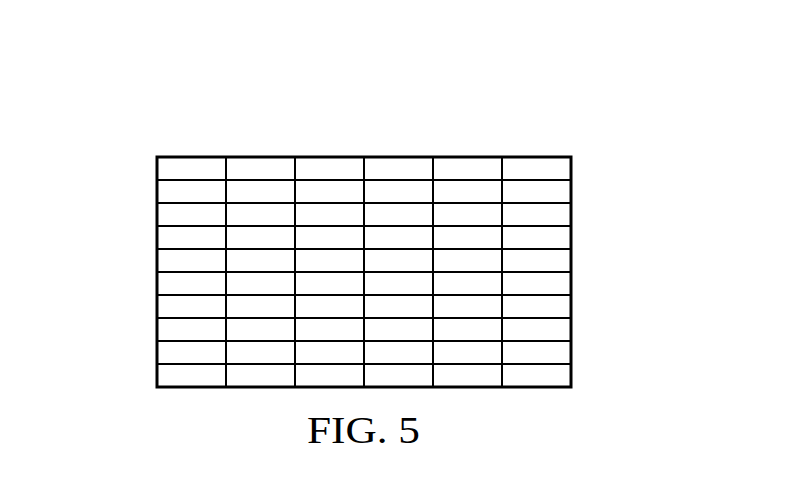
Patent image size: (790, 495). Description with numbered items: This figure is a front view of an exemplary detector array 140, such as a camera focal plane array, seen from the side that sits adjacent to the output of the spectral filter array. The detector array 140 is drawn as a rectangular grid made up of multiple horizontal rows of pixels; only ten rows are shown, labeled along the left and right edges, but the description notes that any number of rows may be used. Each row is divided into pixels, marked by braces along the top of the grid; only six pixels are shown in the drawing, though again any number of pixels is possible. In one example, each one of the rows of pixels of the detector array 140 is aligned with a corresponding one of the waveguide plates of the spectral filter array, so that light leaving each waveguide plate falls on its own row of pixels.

The detector array 140 is at (300, 56).